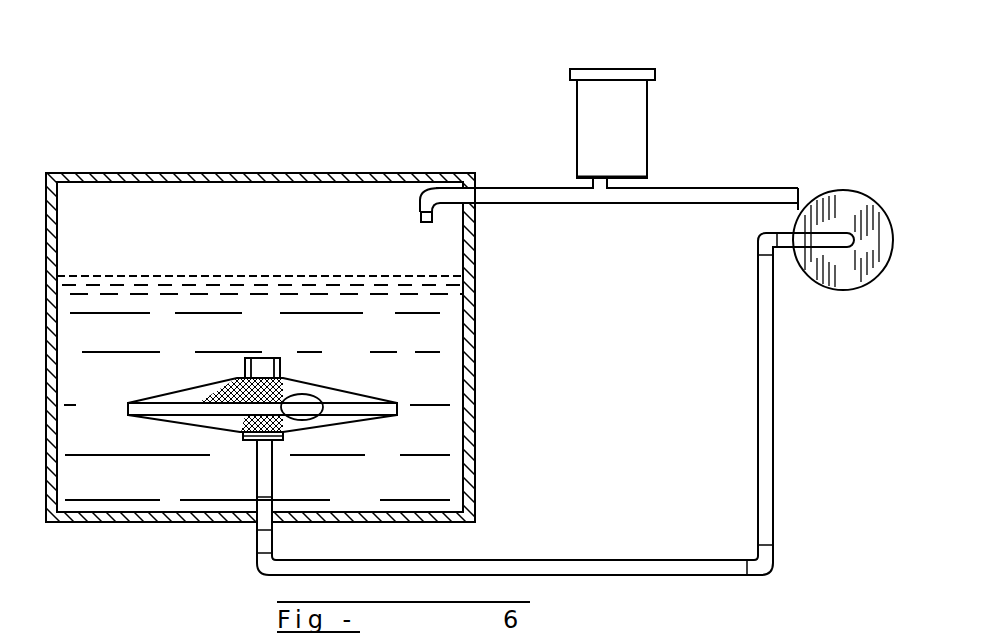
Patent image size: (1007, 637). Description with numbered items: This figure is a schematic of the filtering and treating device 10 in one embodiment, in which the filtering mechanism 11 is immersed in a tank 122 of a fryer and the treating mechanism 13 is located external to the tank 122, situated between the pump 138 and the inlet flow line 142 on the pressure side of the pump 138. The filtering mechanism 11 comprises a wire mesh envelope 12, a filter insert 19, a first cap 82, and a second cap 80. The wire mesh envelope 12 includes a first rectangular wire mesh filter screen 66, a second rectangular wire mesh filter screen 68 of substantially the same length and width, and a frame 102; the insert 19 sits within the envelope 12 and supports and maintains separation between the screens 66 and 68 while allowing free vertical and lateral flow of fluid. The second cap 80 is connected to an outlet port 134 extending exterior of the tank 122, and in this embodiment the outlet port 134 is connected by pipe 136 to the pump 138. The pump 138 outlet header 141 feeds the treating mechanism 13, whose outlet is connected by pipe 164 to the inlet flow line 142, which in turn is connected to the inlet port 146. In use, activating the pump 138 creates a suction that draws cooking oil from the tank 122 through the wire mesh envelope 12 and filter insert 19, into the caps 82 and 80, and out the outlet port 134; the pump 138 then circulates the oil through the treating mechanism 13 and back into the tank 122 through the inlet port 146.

The filtering and treating device 10 is at (300, 118).
The treating mechanism 13 is at (674, 60).
The filtering mechanism 11 is at (330, 368).
The wire mesh envelope 12 is at (128, 407).
The filter insert 19 is at (313, 394).
The first rectangular wire mesh filter screen 66 is at (178, 392).
The second rectangular wire mesh filter screen 68 is at (355, 421).
The second cap 80 is at (283, 362).
The first cap 82 is at (282, 441).
The frame 102 is at (196, 411).
The tank 122 is at (474, 330).
The outlet port 134 is at (255, 519).
The pipe 136 is at (758, 421).
The pump 138 is at (843, 203).
The outlet header 141 is at (683, 188).
The inlet flow line 142 is at (455, 186).
The inlet port 146 is at (425, 223).
The pipe 164 is at (487, 188).